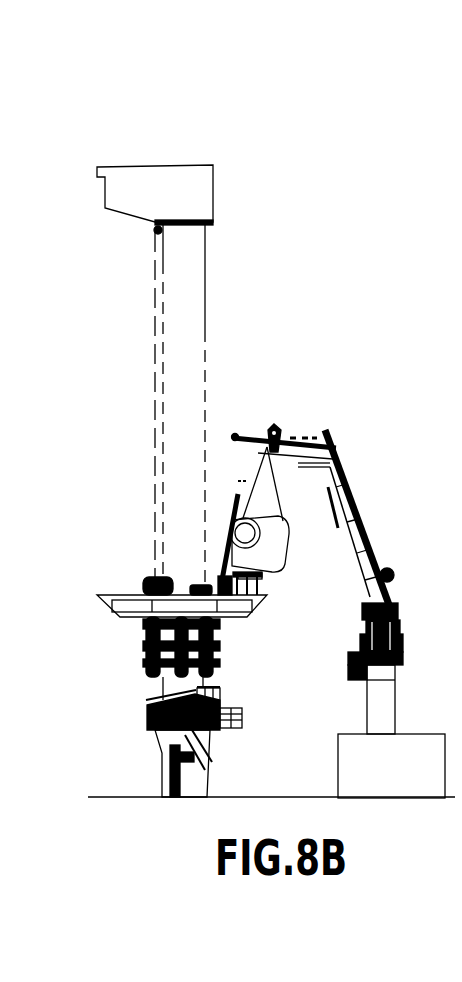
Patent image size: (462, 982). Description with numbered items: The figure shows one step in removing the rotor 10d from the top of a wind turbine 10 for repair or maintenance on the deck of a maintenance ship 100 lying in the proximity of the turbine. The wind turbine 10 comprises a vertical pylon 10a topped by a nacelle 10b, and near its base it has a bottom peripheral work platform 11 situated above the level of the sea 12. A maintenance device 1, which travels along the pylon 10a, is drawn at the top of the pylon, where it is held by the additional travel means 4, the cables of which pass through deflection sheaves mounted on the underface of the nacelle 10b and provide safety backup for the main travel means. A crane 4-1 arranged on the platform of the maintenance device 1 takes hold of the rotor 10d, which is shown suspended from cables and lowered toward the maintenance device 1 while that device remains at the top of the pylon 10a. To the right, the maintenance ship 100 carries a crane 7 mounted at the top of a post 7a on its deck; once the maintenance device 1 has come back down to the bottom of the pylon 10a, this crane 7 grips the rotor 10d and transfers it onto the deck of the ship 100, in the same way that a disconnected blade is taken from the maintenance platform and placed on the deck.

The maintenance device 1 is at (134, 624).
The additional travel means 4 is at (160, 381).
The crane 4-1 is at (233, 502).
The crane 7 is at (338, 523).
The post 7a is at (373, 709).
The wind turbine 10 is at (211, 381).
The pylon 10a is at (190, 322).
The nacelle 10b is at (195, 182).
The rotor 10d is at (268, 545).
The bottom peripheral work platform 11 is at (145, 718).
The sea 12 is at (276, 797).
The maintenance ship 100 is at (412, 775).